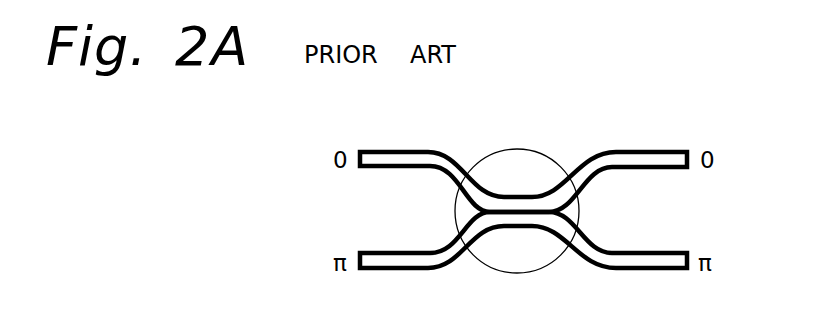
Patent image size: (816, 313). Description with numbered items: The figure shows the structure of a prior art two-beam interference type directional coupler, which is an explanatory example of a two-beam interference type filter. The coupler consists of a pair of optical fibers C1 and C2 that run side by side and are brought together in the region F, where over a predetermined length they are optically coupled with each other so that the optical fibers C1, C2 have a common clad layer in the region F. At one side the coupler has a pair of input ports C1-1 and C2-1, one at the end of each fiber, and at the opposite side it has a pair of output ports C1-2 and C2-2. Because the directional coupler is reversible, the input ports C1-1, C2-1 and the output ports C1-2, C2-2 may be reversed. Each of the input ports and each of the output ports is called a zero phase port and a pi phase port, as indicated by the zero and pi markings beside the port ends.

The optical fiber C1 is at (524, 164).
The input port C1-1 is at (381, 141).
The output port C1-2 is at (663, 142).
The optical fiber C2 is at (524, 257).
The input port C2-1 is at (381, 245).
The output port C2-2 is at (663, 245).
The region F is at (517, 183).